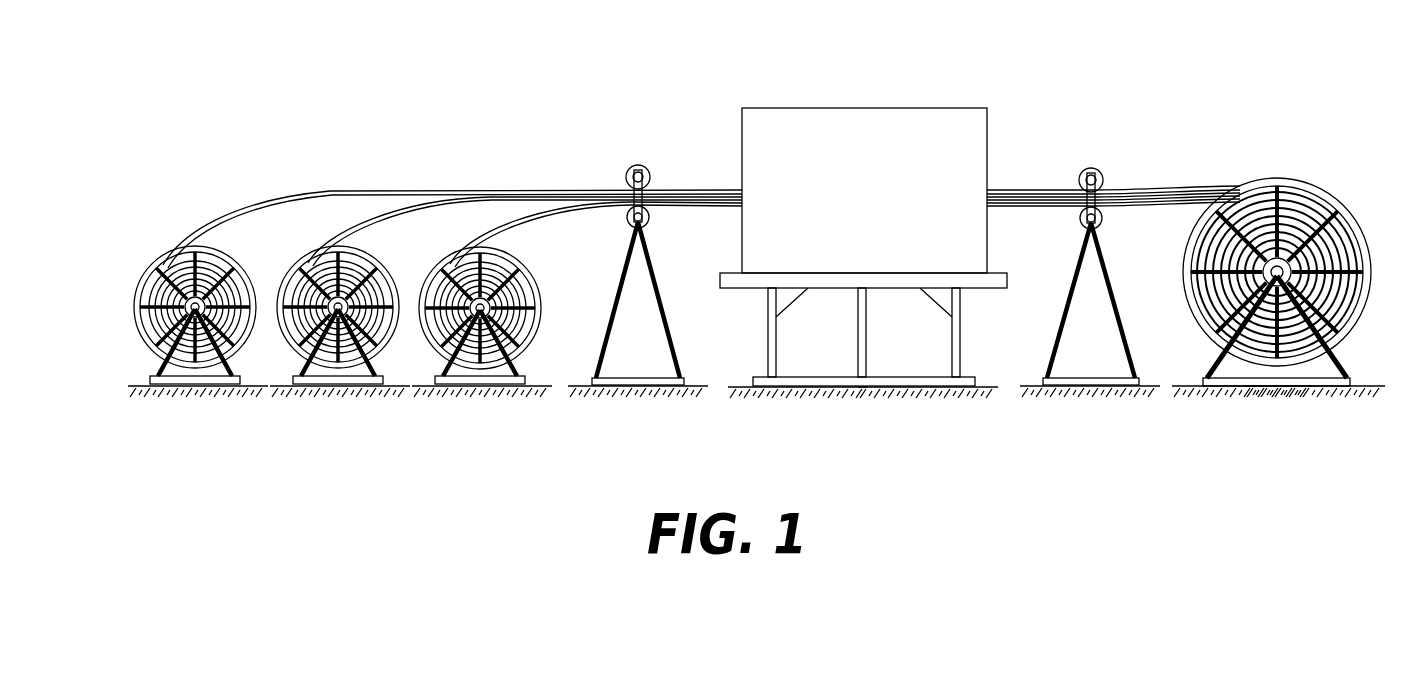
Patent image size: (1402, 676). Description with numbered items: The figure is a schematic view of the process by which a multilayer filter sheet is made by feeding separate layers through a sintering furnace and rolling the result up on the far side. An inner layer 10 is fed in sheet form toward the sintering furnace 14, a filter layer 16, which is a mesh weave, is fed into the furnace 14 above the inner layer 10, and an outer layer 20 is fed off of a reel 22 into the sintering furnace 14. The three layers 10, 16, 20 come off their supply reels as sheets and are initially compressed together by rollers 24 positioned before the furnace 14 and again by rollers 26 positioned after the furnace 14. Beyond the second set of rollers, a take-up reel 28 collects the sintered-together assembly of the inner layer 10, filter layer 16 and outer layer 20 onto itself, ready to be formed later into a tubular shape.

The inner layer 10 is at (517, 212).
The sintering furnace 14 is at (963, 108).
The filter layer 16 is at (377, 212).
The outer layer 20 is at (197, 228).
The reel 22 is at (150, 272).
The rollers 24 is at (648, 173).
The rollers 26 is at (1093, 168).
The take-up reel 28 is at (1303, 185).